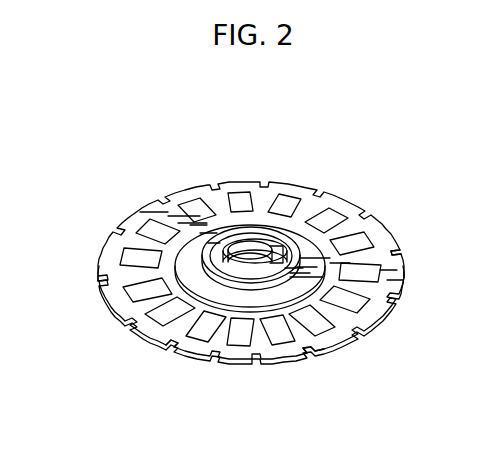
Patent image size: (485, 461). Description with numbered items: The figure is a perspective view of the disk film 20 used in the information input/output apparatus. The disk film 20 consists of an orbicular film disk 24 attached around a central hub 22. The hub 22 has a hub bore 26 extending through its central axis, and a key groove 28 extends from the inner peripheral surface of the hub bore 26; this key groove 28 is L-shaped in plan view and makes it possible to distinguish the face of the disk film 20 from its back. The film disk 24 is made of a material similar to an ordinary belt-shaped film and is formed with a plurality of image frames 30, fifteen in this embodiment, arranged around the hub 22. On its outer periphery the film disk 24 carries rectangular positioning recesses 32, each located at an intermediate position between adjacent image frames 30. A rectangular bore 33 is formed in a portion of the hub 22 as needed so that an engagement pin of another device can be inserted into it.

The disk film 20 is at (353, 172).
The hub 22 is at (185, 258).
The film disk 24 is at (395, 244).
The hub bore 26 is at (250, 243).
The key groove 28 is at (276, 231).
The image frames 30 is at (197, 204).
The positioning recesses 32 is at (395, 296).
The rectangular bore 33 is at (293, 237).